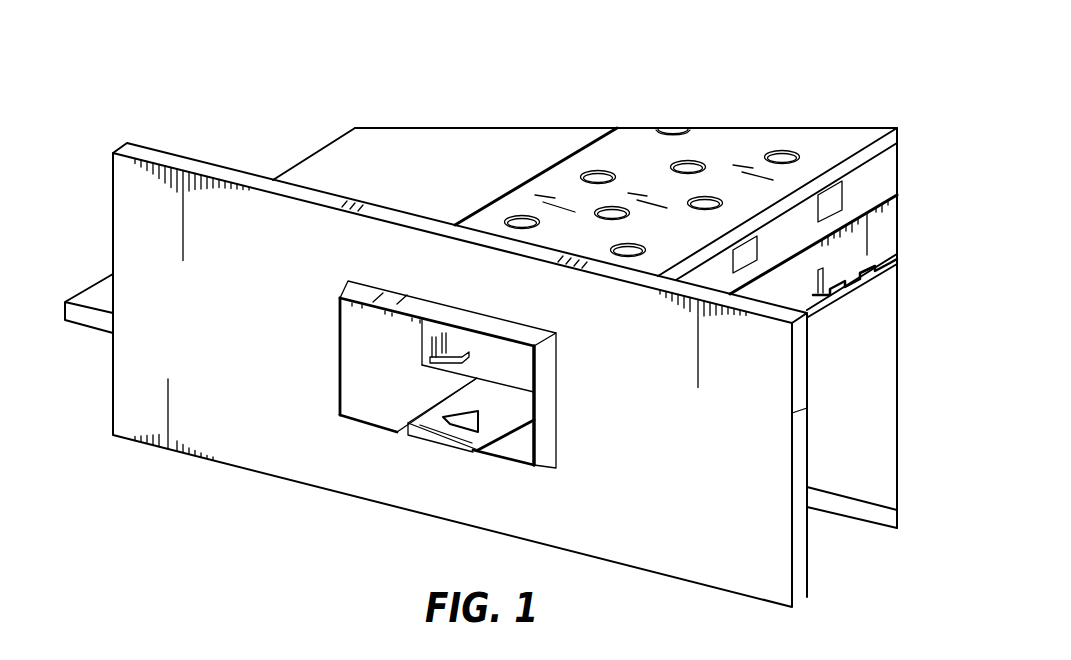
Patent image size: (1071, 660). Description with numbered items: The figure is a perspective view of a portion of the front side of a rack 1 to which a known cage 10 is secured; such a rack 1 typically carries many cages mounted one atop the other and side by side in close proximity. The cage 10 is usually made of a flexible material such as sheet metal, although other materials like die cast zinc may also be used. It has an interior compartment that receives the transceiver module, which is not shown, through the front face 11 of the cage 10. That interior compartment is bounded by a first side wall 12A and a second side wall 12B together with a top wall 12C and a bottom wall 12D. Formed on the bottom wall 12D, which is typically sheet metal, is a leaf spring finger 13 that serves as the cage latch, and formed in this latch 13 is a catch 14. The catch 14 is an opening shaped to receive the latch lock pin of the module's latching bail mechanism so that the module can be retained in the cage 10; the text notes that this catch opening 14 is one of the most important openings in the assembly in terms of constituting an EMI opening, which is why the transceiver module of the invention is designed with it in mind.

The rack 1 is at (668, 74).
The cage 10 is at (410, 363).
The front face 11 is at (543, 420).
The first side wall 12A is at (352, 342).
The second side wall 12B is at (525, 394).
The top wall 12C is at (456, 345).
The bottom wall 12D is at (393, 418).
The leaf spring finger 13 is at (409, 426).
The catch 14 is at (442, 430).